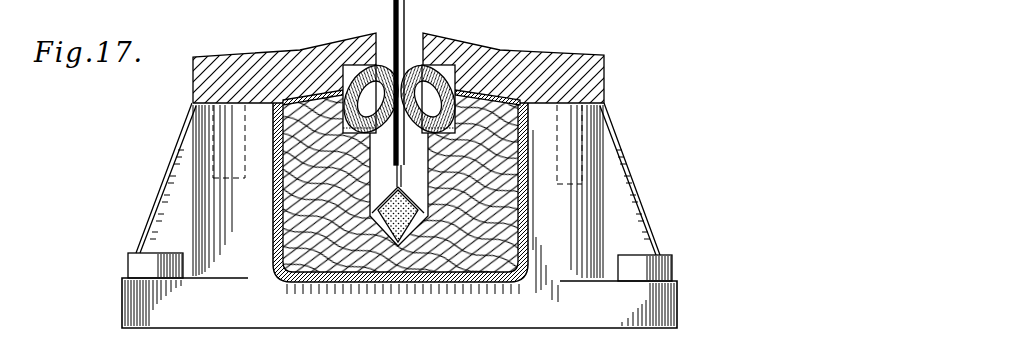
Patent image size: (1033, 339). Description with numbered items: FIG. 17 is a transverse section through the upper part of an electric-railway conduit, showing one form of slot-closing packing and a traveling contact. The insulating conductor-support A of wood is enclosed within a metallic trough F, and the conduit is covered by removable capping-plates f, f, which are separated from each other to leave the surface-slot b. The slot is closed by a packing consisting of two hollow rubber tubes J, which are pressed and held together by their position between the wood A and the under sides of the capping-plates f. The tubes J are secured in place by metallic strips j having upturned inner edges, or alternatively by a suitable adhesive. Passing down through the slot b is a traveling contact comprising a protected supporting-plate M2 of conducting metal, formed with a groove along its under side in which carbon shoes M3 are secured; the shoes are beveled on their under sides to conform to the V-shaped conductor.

The capping-plate f is at (327, 52).
The supporting-plate M2 is at (394, 19).
The surface-slot b is at (414, 36).
The rubber tube J is at (400, 99).
The metallic strip j is at (399, 155).
The insulating grooved conductor-support A is at (274, 209).
The carbon shoe M3 is at (423, 224).
The metallic trough F is at (529, 223).